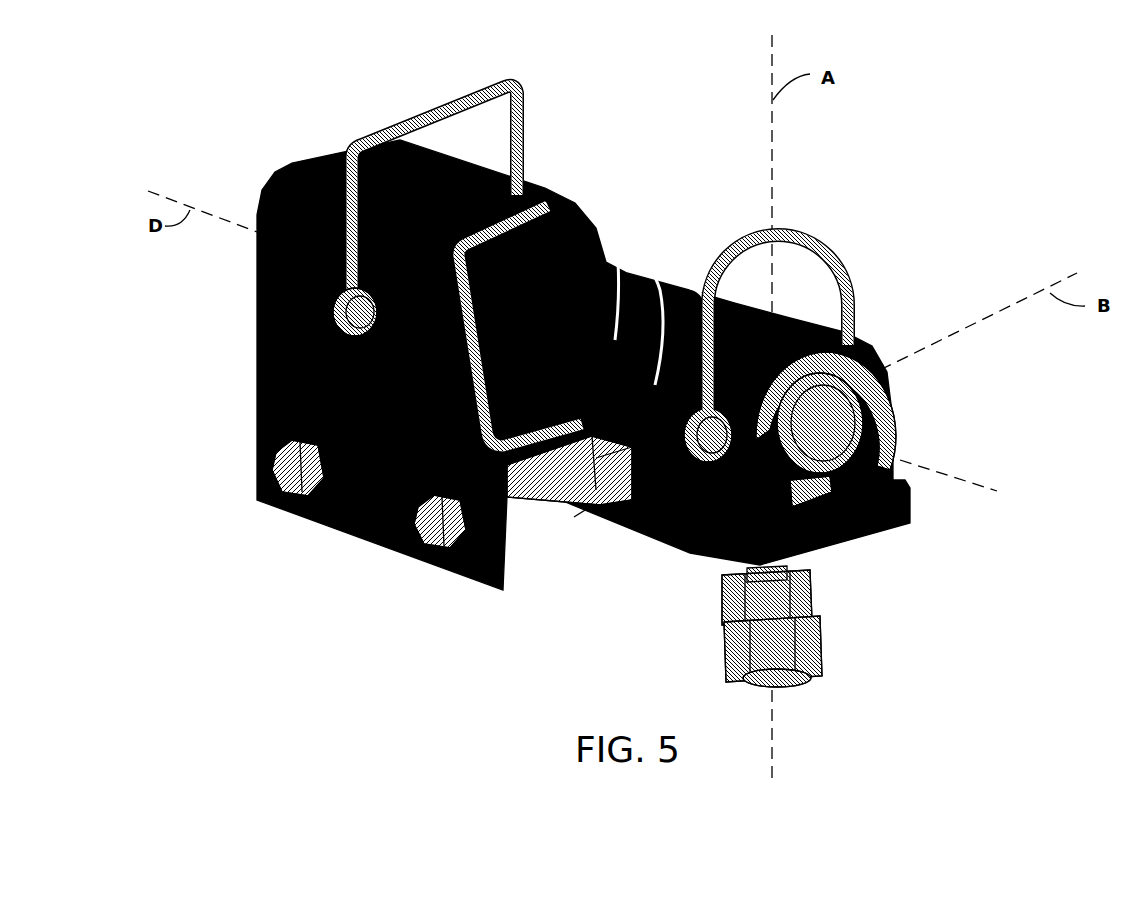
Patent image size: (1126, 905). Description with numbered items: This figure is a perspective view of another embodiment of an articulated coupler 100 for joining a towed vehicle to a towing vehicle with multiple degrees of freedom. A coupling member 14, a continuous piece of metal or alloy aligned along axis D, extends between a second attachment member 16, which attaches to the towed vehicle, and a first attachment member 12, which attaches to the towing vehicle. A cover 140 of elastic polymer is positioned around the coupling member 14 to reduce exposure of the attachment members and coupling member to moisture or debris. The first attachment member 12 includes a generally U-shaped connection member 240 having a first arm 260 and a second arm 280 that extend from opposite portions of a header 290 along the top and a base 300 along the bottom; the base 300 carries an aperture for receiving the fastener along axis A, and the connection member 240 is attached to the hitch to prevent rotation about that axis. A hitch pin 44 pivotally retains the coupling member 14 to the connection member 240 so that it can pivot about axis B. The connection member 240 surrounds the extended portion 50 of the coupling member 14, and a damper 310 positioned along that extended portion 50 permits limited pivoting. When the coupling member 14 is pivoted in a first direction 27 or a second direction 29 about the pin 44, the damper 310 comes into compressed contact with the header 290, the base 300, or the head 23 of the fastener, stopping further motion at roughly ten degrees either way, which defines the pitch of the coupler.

The articulated coupler 100 is at (948, 172).
The second attachment member 16 is at (542, 178).
The coupling member 14 is at (650, 240).
The cover 140 is at (665, 276).
The first attachment member 12 is at (805, 268).
The header 290 is at (826, 318).
The connection member 240 is at (820, 345).
The damper 310 is at (858, 340).
The extended portion 50 is at (824, 420).
The second arm 280 is at (895, 450).
The base 300 is at (882, 515).
The head of the fastener 23 is at (862, 540).
The hitch pin 44 is at (648, 522).
The first arm 260 is at (690, 535).
The first direction 27 is at (1062, 260).
The second direction 29 is at (1032, 290).